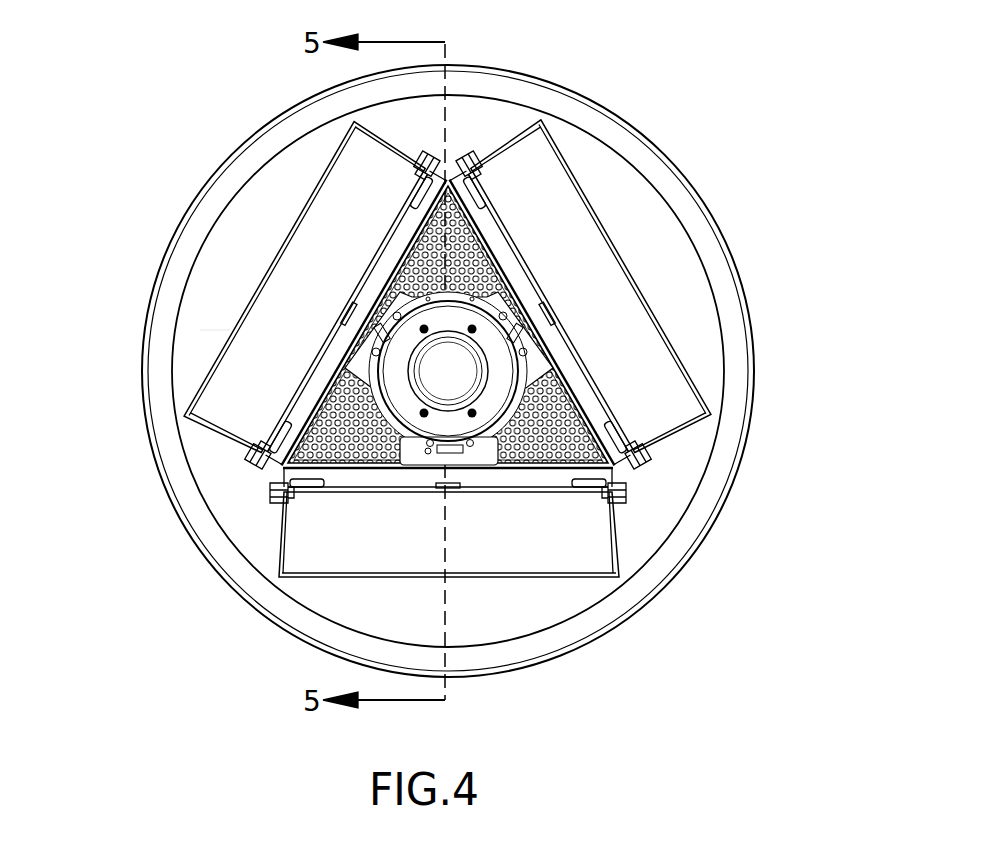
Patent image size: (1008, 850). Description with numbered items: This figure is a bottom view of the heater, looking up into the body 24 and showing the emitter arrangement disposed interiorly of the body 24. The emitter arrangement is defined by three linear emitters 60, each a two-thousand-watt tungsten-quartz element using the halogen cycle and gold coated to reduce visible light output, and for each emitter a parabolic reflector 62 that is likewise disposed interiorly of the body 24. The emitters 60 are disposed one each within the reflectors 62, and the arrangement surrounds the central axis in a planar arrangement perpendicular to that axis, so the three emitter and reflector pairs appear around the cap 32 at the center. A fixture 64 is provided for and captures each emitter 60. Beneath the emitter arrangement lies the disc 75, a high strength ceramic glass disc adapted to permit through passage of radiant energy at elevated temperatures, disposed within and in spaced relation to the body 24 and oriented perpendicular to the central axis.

The body 24 is at (188, 196).
The cap 32 is at (480, 372).
The linear emitter 60 is at (366, 275).
The parabolic reflector 62 is at (283, 287).
The fixture 64 is at (247, 460).
The disc 75 is at (186, 330).